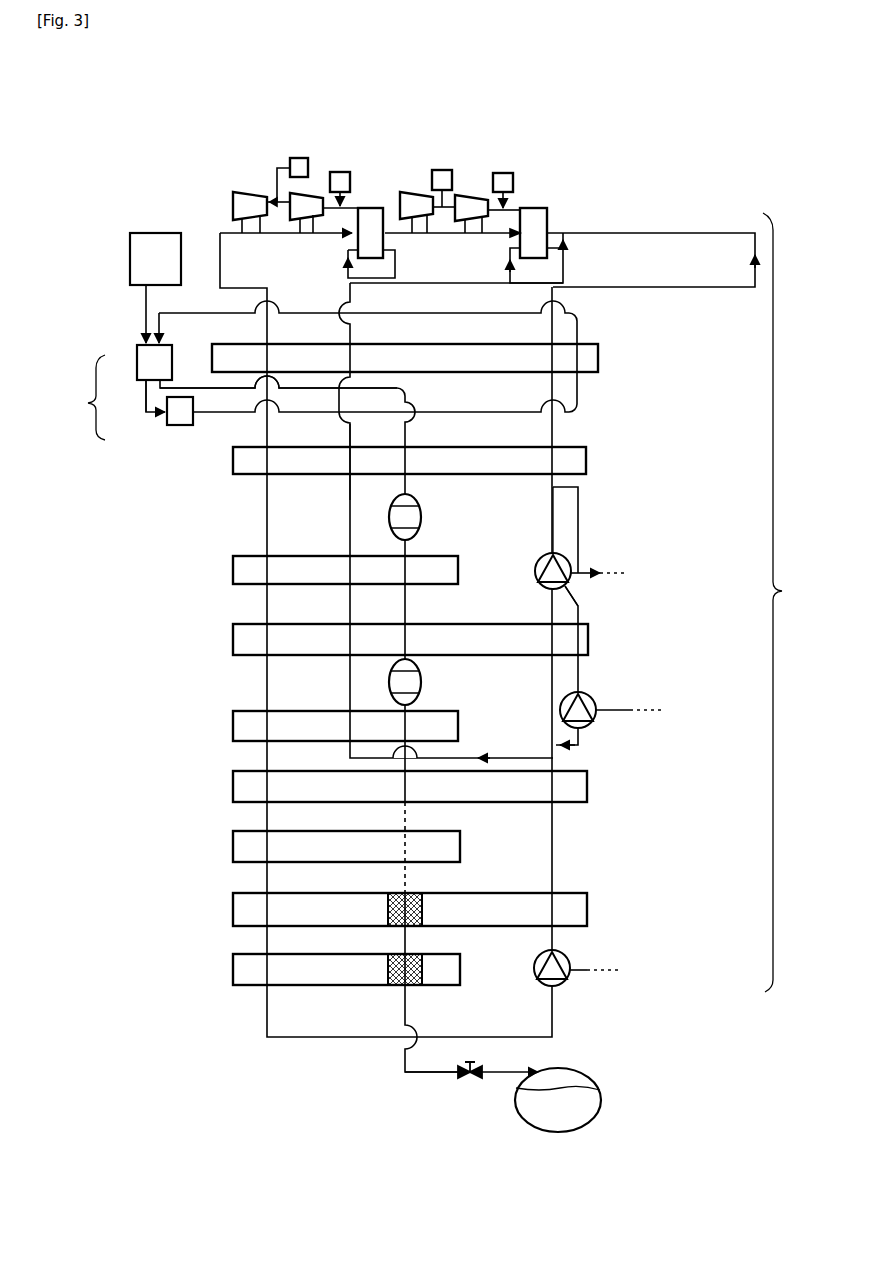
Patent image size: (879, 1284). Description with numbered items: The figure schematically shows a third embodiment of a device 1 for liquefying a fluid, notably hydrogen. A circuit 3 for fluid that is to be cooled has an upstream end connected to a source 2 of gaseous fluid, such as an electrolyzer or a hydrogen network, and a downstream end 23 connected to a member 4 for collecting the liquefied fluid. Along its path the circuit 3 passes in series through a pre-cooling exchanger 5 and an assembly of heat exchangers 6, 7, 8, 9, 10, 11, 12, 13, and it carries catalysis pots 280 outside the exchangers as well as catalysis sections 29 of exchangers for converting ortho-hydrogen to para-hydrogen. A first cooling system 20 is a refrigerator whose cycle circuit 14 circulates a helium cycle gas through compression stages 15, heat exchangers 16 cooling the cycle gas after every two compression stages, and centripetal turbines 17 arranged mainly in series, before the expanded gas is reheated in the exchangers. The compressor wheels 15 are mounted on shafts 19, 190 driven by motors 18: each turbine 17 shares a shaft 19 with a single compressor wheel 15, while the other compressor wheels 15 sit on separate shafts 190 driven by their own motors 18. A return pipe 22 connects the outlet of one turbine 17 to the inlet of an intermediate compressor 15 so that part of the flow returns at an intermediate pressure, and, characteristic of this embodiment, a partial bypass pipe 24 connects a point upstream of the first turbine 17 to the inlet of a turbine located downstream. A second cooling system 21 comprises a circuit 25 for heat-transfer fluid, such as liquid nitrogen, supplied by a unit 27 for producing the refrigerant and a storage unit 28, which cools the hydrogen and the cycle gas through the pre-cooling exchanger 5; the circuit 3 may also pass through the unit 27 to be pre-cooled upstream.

The device for liquefying a fluid 1 is at (128, 730).
The source of gaseous fluid 2 is at (130, 254).
The circuit for fluid that is to be cooled 3 is at (222, 370).
The member for collecting the liquefied fluid 4 is at (585, 1121).
The pre-cooling exchanger 5 is at (225, 393).
The heat exchanger 6 is at (253, 465).
The heat exchanger 7 is at (238, 572).
The heat exchanger 8 is at (243, 640).
The heat exchanger 9 is at (248, 722).
The heat exchanger 10 is at (236, 782).
The heat exchanger 11 is at (244, 842).
The heat exchanger 12 is at (242, 908).
The heat exchanger 13 is at (242, 970).
The cycle circuit 14 is at (558, 522).
The compression stage 15 is at (246, 192).
The heat exchanger for cooling the cycle gas 16 is at (365, 268).
The turbine 17 is at (569, 590).
The motor 18 is at (302, 160).
The shaft 19 is at (271, 199).
The cooling system 20 is at (786, 602).
The second cooling system 21 is at (84, 397).
The return pipe 22 is at (347, 512).
The downstream end 23 is at (510, 1082).
The partial bypass pipe 24 is at (584, 598).
The circuit for heat-transfer fluid 25 is at (143, 406).
The unit for producing the refrigerant 27 is at (137, 366).
The unit for storing the refrigerant 28 is at (172, 422).
The section of exchanger 29 is at (412, 918).
The shaft 190 is at (342, 212).
The catalysis pot 280 is at (416, 522).